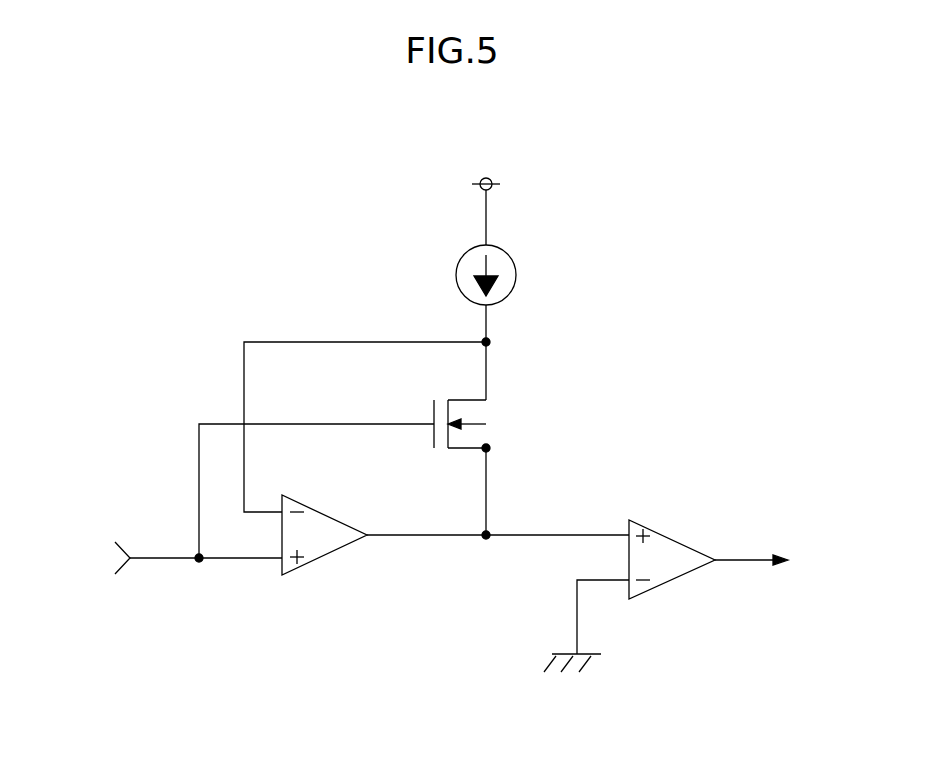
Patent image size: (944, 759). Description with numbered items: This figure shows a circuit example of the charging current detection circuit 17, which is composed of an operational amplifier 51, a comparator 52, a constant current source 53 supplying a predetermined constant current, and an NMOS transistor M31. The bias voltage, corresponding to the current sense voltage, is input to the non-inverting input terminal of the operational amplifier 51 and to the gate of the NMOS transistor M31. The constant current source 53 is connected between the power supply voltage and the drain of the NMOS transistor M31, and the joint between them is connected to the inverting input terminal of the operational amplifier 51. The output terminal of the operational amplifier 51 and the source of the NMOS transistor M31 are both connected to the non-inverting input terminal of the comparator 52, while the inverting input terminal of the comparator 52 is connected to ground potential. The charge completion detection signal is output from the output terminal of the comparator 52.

The charging current detection circuit 17 is at (460, 410).
The operational amplifier 51 is at (317, 562).
The comparator 52 is at (665, 586).
The constant current source 53 is at (457, 274).
The NMOS transistor M31 is at (483, 426).